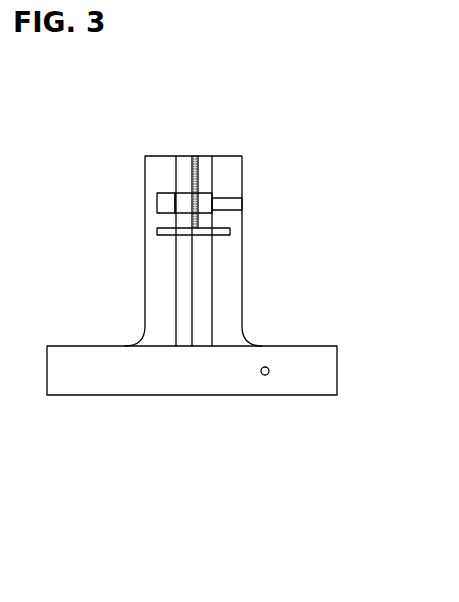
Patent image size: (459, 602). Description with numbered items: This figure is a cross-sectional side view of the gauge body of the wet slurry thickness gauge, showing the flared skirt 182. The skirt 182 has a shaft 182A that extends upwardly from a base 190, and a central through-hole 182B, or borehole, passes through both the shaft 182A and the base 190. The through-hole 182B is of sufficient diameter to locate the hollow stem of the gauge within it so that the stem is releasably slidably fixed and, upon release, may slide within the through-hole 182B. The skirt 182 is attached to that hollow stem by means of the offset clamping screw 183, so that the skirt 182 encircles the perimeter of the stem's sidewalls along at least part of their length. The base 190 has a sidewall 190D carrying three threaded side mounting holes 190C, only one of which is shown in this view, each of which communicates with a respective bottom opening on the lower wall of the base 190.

The skirt 182 is at (100, 307).
The shaft 182A is at (157, 173).
The offset clamping screw 183 is at (242, 201).
The through-hole 182B is at (210, 265).
The base 190 is at (306, 358).
The threaded side mounting holes 190C is at (259, 375).
The sidewall 190D is at (183, 370).